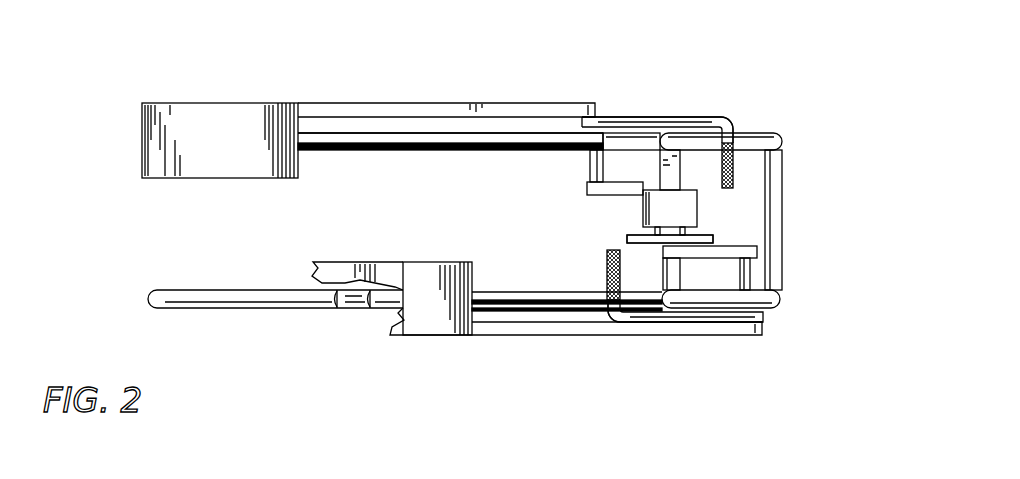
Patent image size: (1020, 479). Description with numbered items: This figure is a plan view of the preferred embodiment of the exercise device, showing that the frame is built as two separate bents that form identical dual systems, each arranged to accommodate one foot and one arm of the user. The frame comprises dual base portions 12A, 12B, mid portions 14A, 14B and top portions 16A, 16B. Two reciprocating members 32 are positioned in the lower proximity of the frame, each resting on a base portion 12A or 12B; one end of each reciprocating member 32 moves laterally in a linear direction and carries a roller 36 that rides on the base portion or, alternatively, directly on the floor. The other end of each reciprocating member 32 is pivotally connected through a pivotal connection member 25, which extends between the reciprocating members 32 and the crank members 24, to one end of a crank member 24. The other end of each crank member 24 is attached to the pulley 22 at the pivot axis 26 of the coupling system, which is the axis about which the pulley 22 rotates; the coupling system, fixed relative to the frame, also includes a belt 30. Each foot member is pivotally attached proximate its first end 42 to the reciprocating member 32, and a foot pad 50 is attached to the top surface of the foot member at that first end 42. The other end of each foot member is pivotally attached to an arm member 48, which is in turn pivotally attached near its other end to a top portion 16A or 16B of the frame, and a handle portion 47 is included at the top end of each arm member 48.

The base portion 12A is at (360, 150).
The base portion 12B is at (232, 300).
The mid portion 14A is at (782, 140).
The mid portion 14B is at (782, 305).
The top portion 16A is at (755, 133).
The top portion 16B is at (728, 322).
The pulley 22 is at (713, 239).
The belt 30 is at (670, 239).
The crank member 24 is at (588, 190).
The pivotal connection member 25 is at (590, 162).
The pivot axis 26 is at (643, 210).
The reciprocating member 32 is at (422, 150).
The roller 36 is at (353, 308).
The first end 42 is at (450, 107).
The handle portion 47 is at (740, 171).
The arm member 48 is at (647, 122).
The foot pad 50 is at (208, 117).